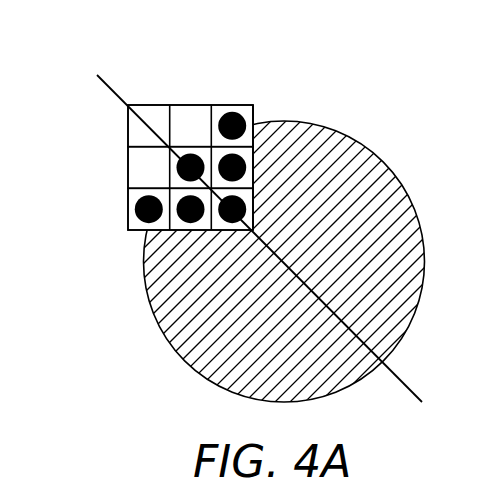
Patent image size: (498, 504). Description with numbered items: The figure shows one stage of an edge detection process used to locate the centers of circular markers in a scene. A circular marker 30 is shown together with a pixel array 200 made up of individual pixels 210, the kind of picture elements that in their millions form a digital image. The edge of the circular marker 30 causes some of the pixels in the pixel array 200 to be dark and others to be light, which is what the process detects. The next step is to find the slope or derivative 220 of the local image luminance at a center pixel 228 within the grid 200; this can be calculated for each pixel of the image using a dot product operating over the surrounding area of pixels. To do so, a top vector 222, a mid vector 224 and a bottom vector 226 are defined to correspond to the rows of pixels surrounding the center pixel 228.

The circular marker 30 is at (387, 163).
The pixel array 200 is at (200, 138).
The pixels 210 is at (255, 118).
The derivative 220 is at (108, 82).
The top vector 222 is at (128, 127).
The mid vector 224 is at (128, 167).
The bottom vector 226 is at (128, 209).
The center pixel 228 is at (191, 160).